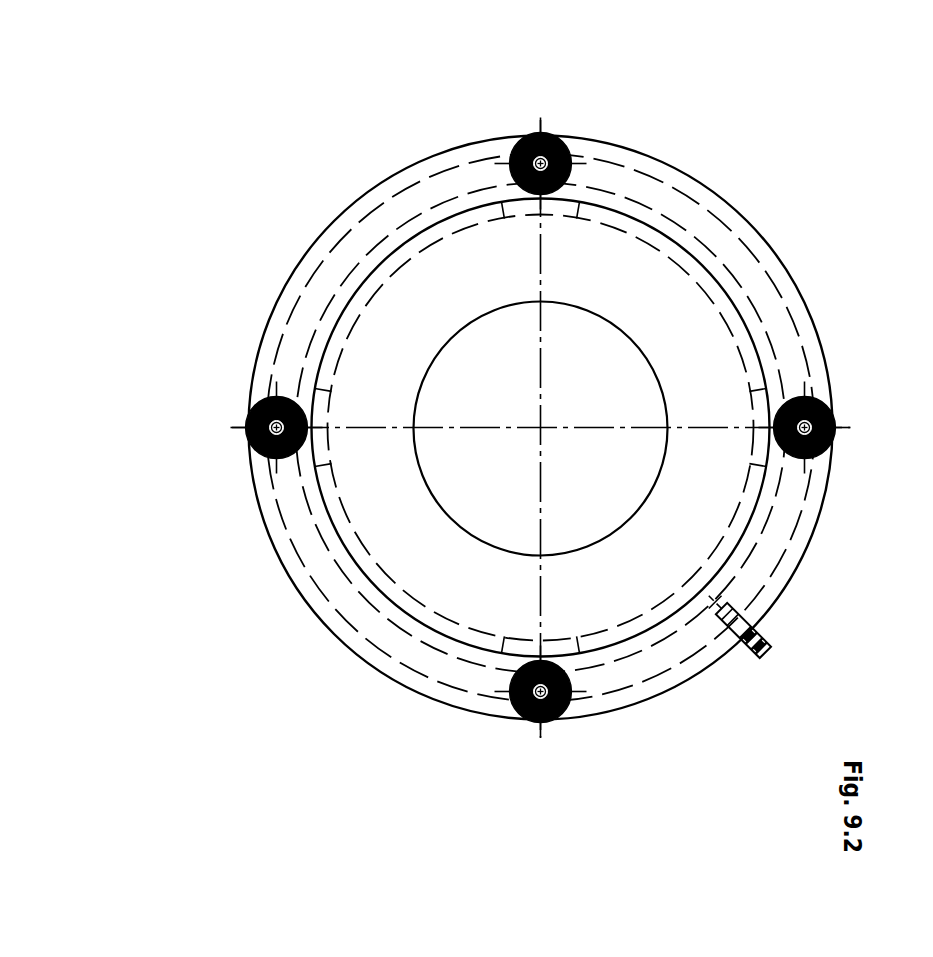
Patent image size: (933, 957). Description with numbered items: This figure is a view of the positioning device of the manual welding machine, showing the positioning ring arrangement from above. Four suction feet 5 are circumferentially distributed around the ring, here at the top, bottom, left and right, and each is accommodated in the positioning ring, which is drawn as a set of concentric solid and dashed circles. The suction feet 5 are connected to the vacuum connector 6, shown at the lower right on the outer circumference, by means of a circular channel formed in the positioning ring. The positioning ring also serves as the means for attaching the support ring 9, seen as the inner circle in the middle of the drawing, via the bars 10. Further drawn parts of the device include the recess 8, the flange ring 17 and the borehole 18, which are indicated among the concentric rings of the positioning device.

The suction foot 5 is at (560, 137).
The vacuum connector 6 is at (772, 637).
The recess 8 is at (680, 252).
The support ring 9 is at (632, 578).
The bar 10 is at (762, 402).
The flange ring 17 is at (440, 640).
The borehole 18 is at (355, 606).